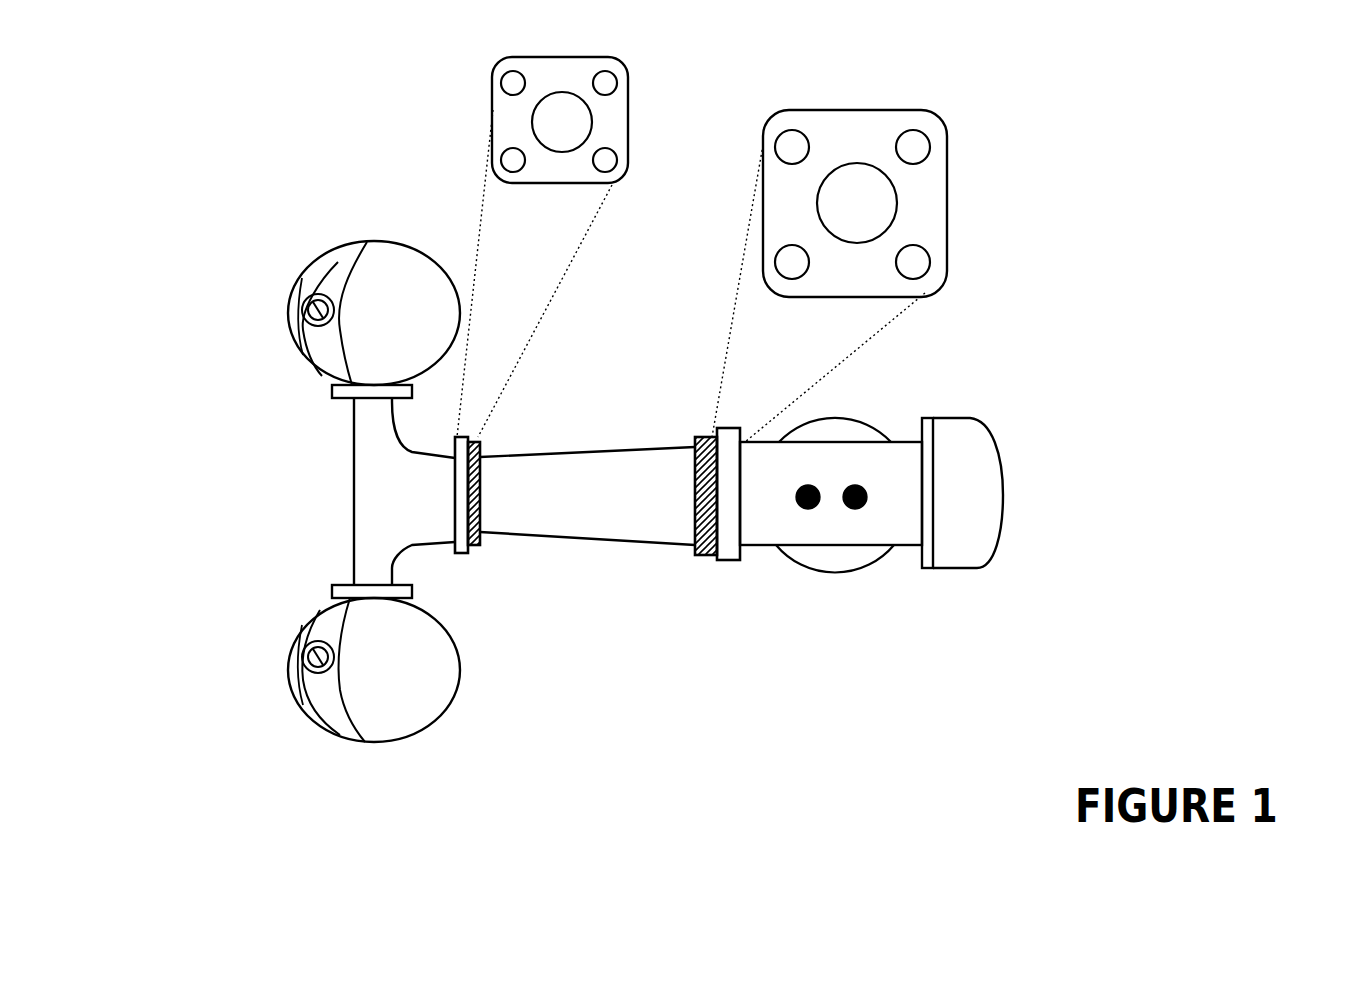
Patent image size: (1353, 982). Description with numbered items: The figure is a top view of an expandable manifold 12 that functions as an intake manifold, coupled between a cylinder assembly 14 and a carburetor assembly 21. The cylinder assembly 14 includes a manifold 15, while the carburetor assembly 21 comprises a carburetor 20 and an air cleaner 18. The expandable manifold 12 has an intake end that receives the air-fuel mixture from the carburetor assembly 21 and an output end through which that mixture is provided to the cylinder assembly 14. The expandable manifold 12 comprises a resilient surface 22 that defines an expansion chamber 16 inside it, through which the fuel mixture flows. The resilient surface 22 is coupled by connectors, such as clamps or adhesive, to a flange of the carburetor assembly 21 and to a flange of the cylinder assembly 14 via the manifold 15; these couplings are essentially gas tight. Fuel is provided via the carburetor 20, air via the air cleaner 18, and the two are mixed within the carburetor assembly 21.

The expandable manifold 12 is at (631, 436).
The cylinder assembly 14 is at (265, 698).
The manifold 15 is at (354, 495).
The expansion chamber 16 is at (575, 470).
The air cleaner 18 is at (997, 406).
The carburetor 20 is at (872, 420).
The carburetor assembly 21 is at (968, 585).
The resilient surface 22 is at (603, 595).